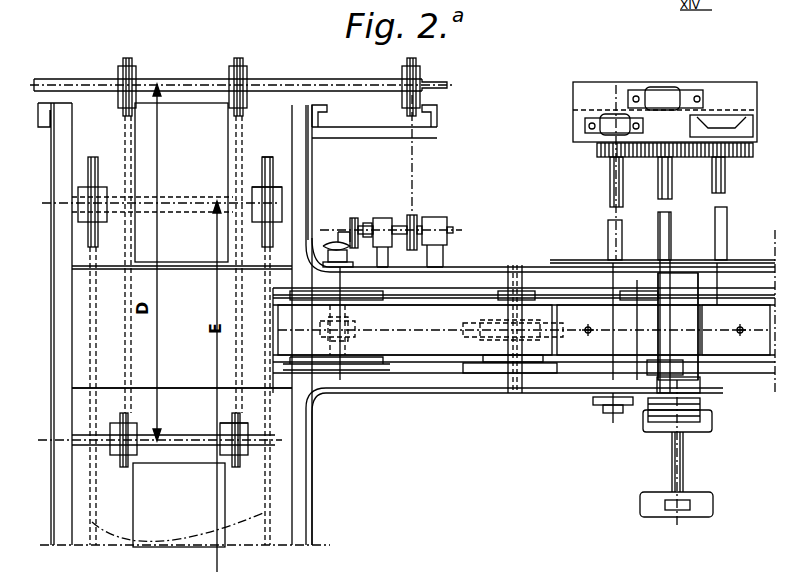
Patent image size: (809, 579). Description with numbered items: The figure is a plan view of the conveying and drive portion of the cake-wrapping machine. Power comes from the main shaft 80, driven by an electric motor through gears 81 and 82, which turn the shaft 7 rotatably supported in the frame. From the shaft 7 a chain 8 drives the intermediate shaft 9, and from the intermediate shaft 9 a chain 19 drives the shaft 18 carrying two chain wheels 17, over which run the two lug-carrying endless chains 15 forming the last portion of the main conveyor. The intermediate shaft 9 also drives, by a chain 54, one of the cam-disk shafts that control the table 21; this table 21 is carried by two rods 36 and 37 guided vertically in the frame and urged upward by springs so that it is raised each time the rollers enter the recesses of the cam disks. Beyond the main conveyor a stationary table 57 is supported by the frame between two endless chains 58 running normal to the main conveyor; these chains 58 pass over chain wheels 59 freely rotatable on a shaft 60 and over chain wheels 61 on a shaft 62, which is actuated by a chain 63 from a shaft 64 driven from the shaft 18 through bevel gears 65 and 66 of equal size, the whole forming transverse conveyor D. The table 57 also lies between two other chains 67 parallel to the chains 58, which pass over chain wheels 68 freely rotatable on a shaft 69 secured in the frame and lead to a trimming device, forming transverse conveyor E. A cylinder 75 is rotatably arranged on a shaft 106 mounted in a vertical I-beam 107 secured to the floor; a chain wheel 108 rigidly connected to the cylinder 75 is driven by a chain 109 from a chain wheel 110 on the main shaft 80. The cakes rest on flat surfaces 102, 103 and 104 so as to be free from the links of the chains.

The shaft 7 is at (668, 244).
The chain 8 is at (580, 362).
The intermediate shaft 9 is at (513, 265).
The endless chains 15 is at (437, 295).
The chain wheels 17 is at (374, 354).
The shaft 18 is at (322, 345).
The chain 19 is at (420, 370).
The table 21 is at (725, 315).
The rod 36 is at (743, 332).
The rod 37 is at (590, 331).
The chain 54 is at (552, 290).
The stationary table 57 is at (180, 371).
The endless chains 58 is at (226, 147).
The chain wheels 59 is at (127, 468).
The shaft 60 is at (186, 448).
The chain wheels 61 is at (236, 62).
The shaft 62 is at (290, 84).
The chain 63 is at (414, 168).
The shaft 64 is at (452, 232).
The bevel gear 65 is at (352, 220).
The bevel gear 66 is at (332, 242).
The chains 67 is at (177, 531).
The chain wheels 68 is at (93, 160).
The shaft 69 is at (180, 210).
The cylinder 75 is at (692, 337).
The main shaft 80 is at (614, 118).
The gear 81 is at (593, 152).
The gear 82 is at (650, 160).
The flat surface 102 is at (456, 343).
The flat surface 103 is at (230, 158).
The flat surface 104 is at (219, 506).
The shaft 106 is at (686, 456).
The vertical I-beam 107 is at (680, 498).
The chain wheel 108 is at (692, 406).
The chain 109 is at (645, 408).
The chain wheel 110 is at (602, 412).